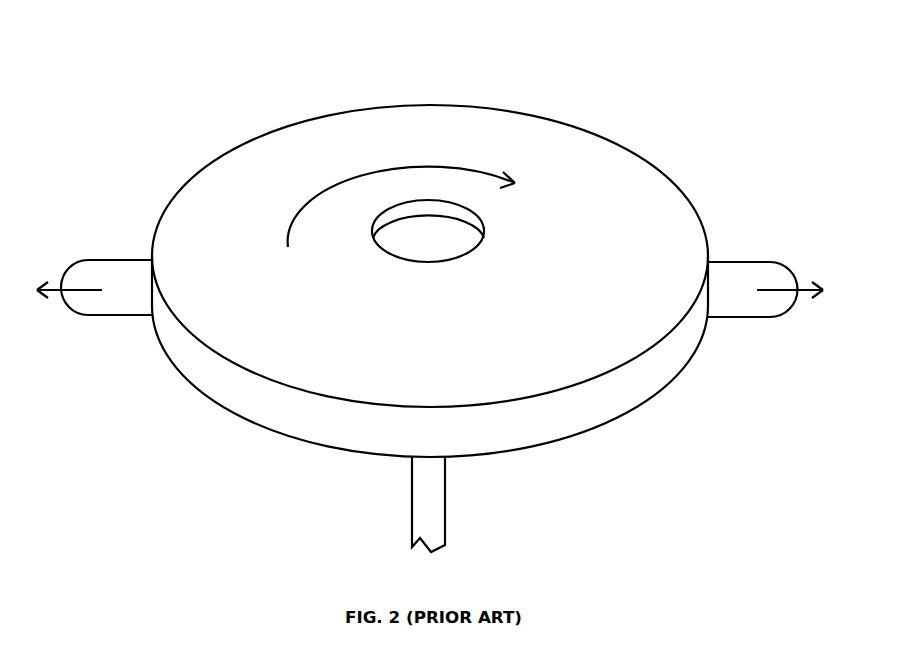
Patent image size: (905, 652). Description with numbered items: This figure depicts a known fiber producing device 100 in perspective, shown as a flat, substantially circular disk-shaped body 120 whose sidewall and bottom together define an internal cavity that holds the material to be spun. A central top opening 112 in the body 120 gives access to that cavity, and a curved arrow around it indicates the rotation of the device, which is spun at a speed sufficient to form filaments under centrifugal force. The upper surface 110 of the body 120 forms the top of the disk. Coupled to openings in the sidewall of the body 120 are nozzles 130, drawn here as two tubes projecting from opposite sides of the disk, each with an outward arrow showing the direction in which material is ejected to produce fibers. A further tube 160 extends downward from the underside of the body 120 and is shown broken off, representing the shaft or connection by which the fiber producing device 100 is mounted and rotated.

The fiber producing device 100 is at (236, 74).
The filter body top 110 is at (515, 122).
The central opening 112 is at (422, 248).
The body 120 is at (308, 434).
The nozzle 130 is at (748, 268).
The bottom tube 160 is at (443, 527).